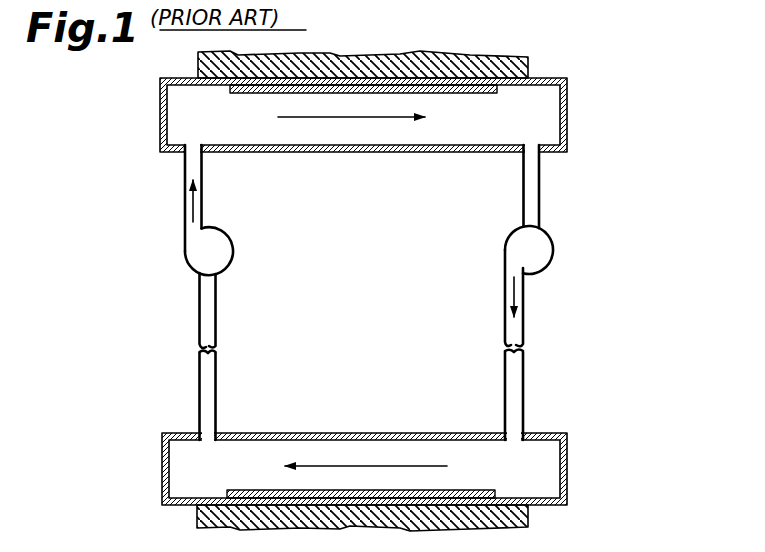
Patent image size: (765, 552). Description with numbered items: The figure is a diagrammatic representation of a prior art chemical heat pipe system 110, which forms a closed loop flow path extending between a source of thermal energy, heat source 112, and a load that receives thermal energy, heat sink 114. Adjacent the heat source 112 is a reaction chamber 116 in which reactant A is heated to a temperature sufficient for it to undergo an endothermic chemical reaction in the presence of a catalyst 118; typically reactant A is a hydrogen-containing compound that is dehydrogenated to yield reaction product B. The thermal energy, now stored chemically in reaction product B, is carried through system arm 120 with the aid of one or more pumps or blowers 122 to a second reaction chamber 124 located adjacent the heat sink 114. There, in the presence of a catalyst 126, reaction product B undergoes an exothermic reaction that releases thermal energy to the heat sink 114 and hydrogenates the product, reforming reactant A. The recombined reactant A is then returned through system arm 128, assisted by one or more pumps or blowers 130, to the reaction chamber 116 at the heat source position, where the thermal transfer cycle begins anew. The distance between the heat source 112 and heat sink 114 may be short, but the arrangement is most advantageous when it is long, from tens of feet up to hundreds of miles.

The chemical heat pipe system 110 is at (585, 236).
The heat source 112 is at (515, 515).
The heat sink 114 is at (510, 63).
The reaction chamber 116 is at (368, 451).
The catalyst 118 is at (235, 495).
The system arm 120 is at (191, 207).
The pumps or blowers 122 is at (200, 262).
The reaction chamber 124 is at (350, 130).
The catalyst 126 is at (488, 93).
The system arm 128 is at (531, 193).
The pumps or blowers 130 is at (538, 257).